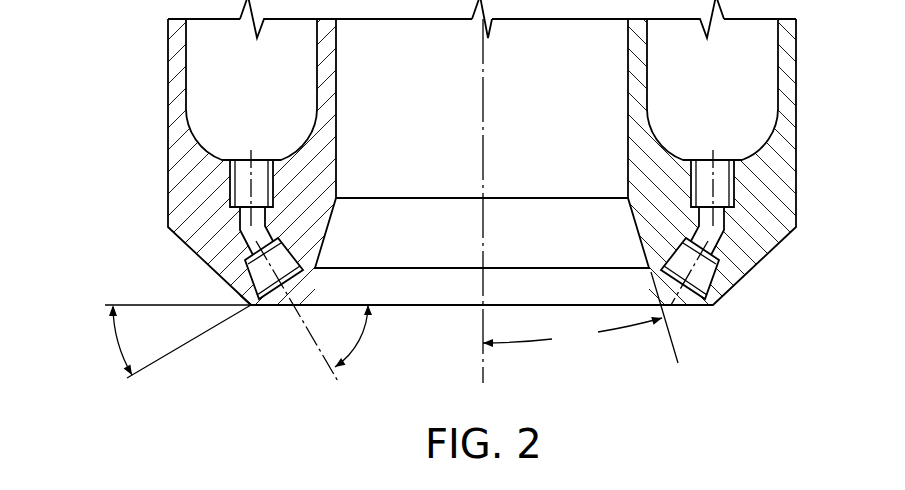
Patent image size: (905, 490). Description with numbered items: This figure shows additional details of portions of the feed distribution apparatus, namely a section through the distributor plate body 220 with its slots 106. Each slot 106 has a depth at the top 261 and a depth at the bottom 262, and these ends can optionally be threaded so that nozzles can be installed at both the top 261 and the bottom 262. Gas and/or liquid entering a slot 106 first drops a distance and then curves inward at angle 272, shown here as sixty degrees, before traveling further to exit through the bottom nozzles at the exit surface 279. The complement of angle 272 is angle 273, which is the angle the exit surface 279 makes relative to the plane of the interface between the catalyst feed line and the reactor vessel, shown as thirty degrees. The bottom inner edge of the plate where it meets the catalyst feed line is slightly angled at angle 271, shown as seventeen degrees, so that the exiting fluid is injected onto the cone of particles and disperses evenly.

The body 220 is at (186, 243).
The top of the slots 261 is at (273, 184).
The slots 106 is at (283, 222).
The bottom of the slots 262 is at (265, 307).
The exit surface 279 is at (249, 308).
The angle 273 is at (97, 340).
The angle 272 is at (376, 350).
The angle 271 is at (577, 352).